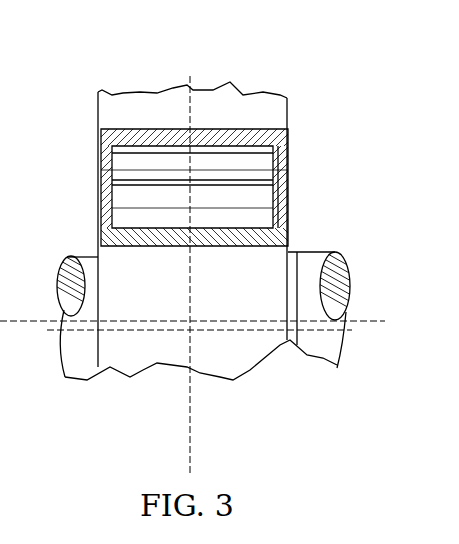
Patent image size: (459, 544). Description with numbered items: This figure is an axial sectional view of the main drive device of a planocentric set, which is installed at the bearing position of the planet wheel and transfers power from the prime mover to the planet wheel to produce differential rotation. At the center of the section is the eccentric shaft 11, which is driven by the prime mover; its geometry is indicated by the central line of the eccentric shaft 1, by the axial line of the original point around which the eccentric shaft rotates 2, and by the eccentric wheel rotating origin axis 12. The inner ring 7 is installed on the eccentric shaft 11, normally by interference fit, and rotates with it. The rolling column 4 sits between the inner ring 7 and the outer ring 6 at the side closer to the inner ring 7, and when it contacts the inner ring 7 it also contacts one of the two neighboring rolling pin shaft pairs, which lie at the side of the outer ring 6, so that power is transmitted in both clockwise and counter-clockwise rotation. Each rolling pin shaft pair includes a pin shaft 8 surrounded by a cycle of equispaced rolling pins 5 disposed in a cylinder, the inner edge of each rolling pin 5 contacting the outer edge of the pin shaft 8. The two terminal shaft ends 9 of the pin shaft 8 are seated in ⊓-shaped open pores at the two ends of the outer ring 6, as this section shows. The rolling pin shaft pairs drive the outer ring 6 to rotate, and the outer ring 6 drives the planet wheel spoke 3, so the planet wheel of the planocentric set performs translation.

The central line of the eccentric shaft 1 is at (308, 318).
The axial line of the original point around which the eccentric shaft rotates 2 is at (340, 322).
The planet wheel spoke 3 is at (118, 112).
The rolling column 4 is at (250, 140).
The rolling pin 5 is at (146, 146).
The outer ring 6 is at (287, 108).
The inner ring 7 is at (278, 197).
The pin shaft 8 is at (200, 158).
The shaft end 9 is at (98, 146).
The eccentric shaft 11 is at (272, 262).
The eccentric wheel rotating origin axis 12 is at (308, 268).